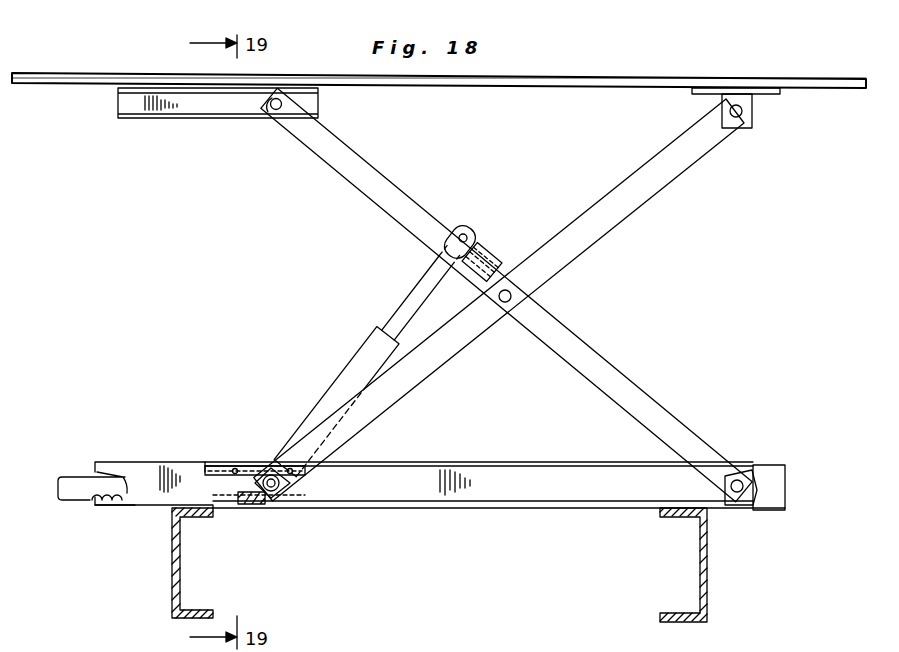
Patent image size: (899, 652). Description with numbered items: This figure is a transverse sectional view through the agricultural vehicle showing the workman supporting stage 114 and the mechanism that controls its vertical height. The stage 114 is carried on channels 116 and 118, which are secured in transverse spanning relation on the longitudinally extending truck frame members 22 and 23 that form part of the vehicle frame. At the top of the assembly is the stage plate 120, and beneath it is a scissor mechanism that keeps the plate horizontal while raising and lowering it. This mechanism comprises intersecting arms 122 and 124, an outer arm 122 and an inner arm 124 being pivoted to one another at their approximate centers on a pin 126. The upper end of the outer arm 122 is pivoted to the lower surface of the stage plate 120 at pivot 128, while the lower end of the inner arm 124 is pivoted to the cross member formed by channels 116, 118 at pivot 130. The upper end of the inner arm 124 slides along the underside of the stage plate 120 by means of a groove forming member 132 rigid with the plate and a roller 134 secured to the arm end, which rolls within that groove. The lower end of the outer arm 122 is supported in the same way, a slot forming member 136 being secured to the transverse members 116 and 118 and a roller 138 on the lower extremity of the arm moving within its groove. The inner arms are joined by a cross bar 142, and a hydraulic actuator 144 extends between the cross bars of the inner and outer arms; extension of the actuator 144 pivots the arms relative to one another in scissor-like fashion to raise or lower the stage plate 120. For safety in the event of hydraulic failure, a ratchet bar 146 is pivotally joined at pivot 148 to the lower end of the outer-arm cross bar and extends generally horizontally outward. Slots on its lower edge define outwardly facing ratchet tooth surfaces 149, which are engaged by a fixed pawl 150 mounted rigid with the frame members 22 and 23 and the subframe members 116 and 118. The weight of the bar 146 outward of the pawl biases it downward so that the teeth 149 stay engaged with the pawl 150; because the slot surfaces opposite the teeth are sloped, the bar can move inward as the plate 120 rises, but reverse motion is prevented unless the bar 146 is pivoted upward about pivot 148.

The workman supporting stage 114 is at (88, 68).
The stage plate 120 is at (641, 78).
The groove forming member 132 is at (196, 108).
The roller 134 is at (283, 128).
The inner arm 124 is at (625, 381).
The outer arm 122 is at (665, 182).
The pivot 128 is at (740, 126).
The pin 126 is at (505, 304).
The hydraulic actuator 144 is at (363, 358).
The cross bar 142 is at (478, 266).
The channel 116 is at (532, 482).
The channel 118 is at (150, 468).
The ratchet bar 146 is at (70, 480).
The fixed pawl 150 is at (93, 500).
The ratchet tooth surfaces 149 is at (124, 500).
The slot forming member 136 is at (236, 470).
The roller 138 is at (288, 486).
The pivot 148 is at (255, 505).
The pivot 130 is at (742, 478).
The longitudinally extending frame member 22 is at (172, 600).
The longitudinally extending frame member 23 is at (708, 592).